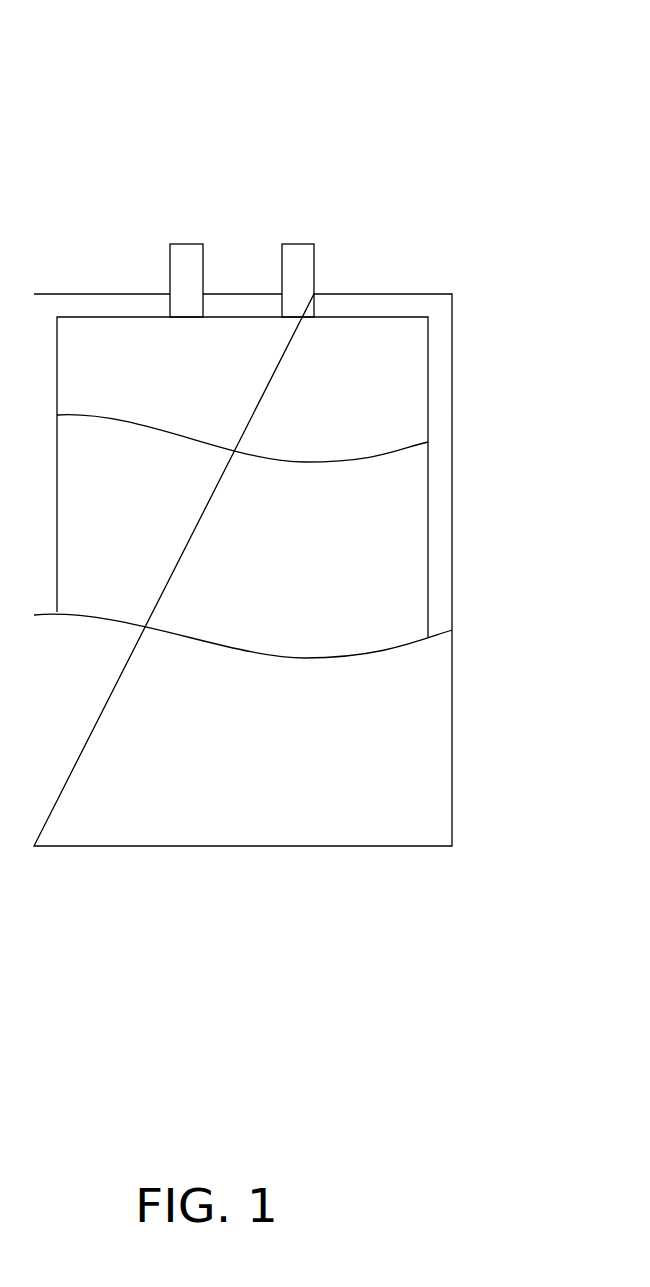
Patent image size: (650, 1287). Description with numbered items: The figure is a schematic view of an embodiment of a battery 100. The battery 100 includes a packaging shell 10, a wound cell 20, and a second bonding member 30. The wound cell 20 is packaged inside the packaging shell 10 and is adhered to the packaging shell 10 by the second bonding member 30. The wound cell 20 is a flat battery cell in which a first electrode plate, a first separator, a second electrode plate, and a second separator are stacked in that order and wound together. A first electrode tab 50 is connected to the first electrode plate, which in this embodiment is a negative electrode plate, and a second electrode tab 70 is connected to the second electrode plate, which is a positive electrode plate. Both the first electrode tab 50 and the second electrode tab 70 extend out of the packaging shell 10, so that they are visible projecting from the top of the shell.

The battery 100 is at (134, 46).
The packaging shell 10 is at (427, 700).
The wound cell 20 is at (402, 353).
The second bonding member 30 is at (392, 503).
The first electrode tab 50 is at (182, 257).
The second electrode tab 70 is at (298, 258).